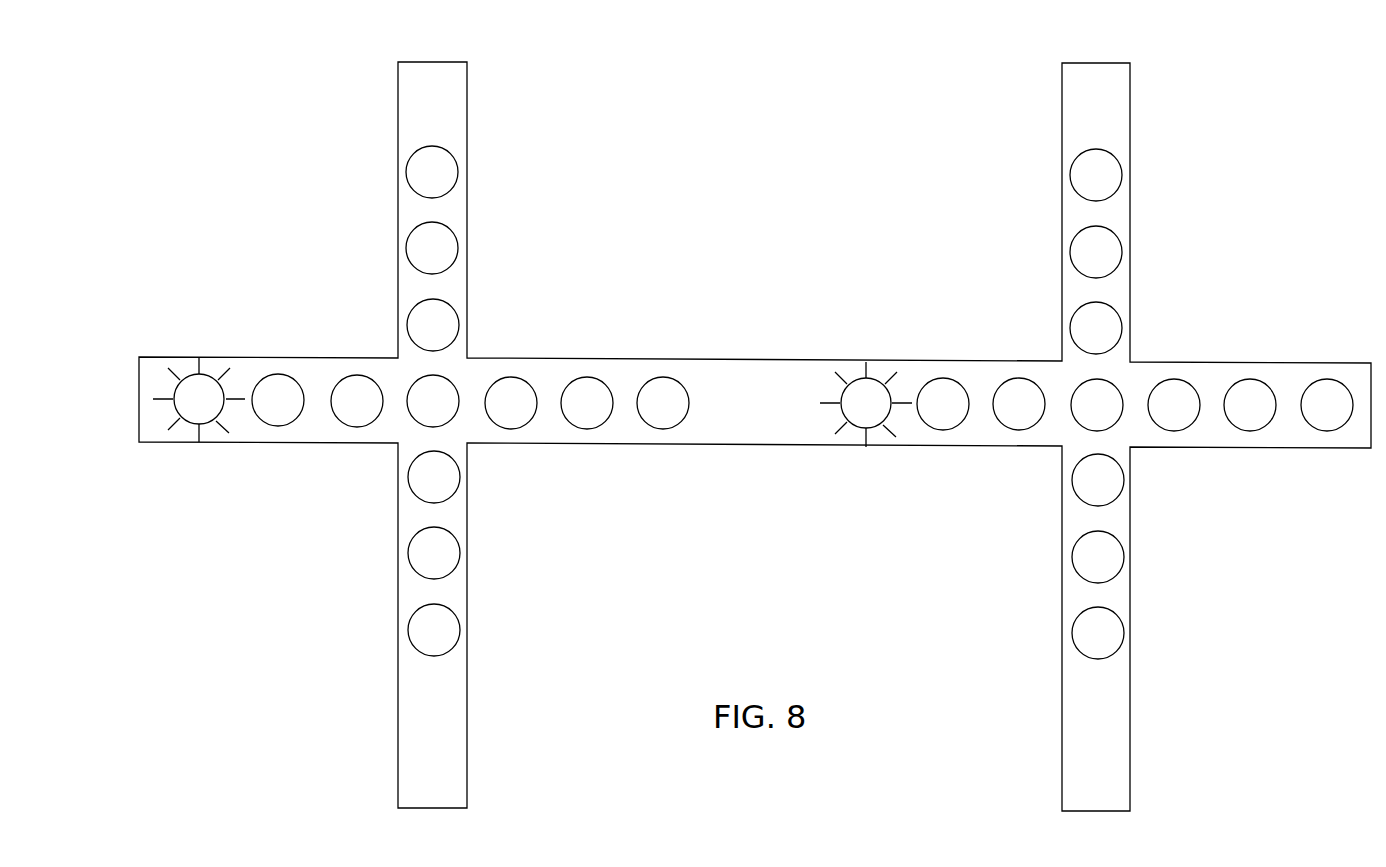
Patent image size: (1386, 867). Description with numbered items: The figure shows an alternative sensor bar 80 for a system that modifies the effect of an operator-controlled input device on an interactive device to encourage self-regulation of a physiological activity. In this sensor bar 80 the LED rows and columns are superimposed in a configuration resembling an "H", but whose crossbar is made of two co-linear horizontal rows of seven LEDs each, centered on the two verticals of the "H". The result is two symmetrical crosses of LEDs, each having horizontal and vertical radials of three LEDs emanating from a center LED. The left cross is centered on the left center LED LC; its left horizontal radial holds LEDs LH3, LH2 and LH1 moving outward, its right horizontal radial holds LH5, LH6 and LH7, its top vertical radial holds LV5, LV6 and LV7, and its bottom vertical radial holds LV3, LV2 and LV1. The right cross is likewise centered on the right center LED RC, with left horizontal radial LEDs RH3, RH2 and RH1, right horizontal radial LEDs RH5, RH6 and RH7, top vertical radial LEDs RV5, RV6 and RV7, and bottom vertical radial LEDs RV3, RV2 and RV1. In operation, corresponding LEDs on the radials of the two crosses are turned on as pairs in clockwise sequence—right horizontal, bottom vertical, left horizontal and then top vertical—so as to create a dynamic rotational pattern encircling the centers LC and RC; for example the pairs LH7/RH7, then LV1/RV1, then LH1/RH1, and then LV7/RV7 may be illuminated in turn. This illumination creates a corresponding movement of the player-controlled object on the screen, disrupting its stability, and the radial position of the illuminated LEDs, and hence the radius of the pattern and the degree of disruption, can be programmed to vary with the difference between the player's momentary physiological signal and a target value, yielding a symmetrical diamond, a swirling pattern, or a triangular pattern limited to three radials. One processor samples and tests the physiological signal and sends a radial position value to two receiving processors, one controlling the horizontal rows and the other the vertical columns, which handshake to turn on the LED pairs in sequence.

The sensor bar 80 is at (1123, 87).
The top left vertical radial LED LV7 is at (432, 172).
The left vertical column LED LV6 is at (432, 248).
The left vertical column LED LV5 is at (433, 325).
The left center LED LC is at (433, 401).
The left vertical column LED LV3 is at (434, 477).
The left vertical column LED LV2 is at (434, 553).
The bottom left vertical radial LED LV1 is at (434, 630).
The left horizontal radial LED LH1 is at (199, 399).
The left horizontal row LED LH2 is at (278, 400).
The left horizontal row LED LH3 is at (357, 401).
The left horizontal row LED LH5 is at (511, 403).
The left horizontal row LED LH6 is at (587, 403).
The right horizontal radial LED of left cross LH7 is at (663, 403).
The left horizontal radial LED of right cross RH1 is at (866, 404).
The right horizontal row LED RH2 is at (943, 404).
The right horizontal row LED RH3 is at (1019, 404).
The right center LED RC is at (1097, 405).
The right horizontal row LED RH5 is at (1174, 405).
The right horizontal row LED RH6 is at (1250, 405).
The right horizontal radial LED of right cross RH7 is at (1327, 405).
The top right vertical radial LED RV7 is at (1096, 175).
The right vertical column LED RV6 is at (1096, 252).
The right vertical column LED RV5 is at (1096, 328).
The right vertical column LED RV3 is at (1098, 480).
The right vertical column LED RV2 is at (1098, 557).
The bottom right vertical radial LED RV1 is at (1098, 633).